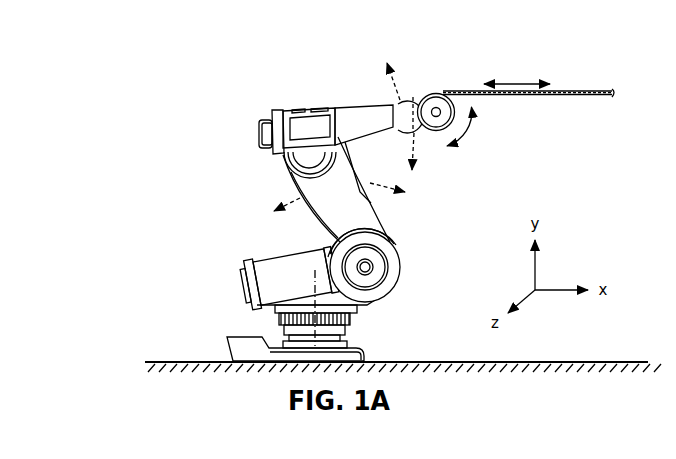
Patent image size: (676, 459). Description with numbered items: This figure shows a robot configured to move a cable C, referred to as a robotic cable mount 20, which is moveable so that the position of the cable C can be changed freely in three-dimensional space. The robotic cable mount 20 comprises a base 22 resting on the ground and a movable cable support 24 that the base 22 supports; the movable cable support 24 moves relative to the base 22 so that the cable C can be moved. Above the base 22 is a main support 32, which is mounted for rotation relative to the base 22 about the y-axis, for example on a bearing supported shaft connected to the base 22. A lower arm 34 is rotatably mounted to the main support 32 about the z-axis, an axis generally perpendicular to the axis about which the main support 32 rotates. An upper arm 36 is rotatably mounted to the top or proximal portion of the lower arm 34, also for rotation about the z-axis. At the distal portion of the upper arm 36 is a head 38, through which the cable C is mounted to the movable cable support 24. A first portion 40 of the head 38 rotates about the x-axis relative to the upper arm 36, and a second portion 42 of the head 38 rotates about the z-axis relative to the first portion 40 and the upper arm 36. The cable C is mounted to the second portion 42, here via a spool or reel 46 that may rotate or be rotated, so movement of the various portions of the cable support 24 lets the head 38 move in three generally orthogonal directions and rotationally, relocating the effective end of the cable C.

The robotic cable mount 20 is at (299, 80).
The base 22 is at (358, 344).
The movable cable support 24 is at (266, 188).
The main support 32 is at (405, 281).
The lower arm 34 is at (400, 215).
The upper arm 36 is at (355, 95).
The head 38 is at (413, 88).
The first portion of the head 40 is at (407, 124).
The second portion of the head 42 is at (440, 103).
The spool or reel 46 is at (432, 129).
The cable C is at (583, 88).